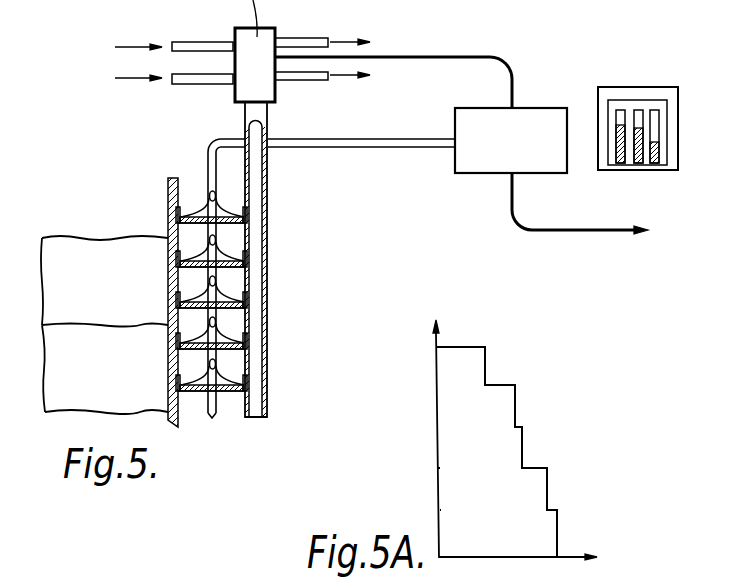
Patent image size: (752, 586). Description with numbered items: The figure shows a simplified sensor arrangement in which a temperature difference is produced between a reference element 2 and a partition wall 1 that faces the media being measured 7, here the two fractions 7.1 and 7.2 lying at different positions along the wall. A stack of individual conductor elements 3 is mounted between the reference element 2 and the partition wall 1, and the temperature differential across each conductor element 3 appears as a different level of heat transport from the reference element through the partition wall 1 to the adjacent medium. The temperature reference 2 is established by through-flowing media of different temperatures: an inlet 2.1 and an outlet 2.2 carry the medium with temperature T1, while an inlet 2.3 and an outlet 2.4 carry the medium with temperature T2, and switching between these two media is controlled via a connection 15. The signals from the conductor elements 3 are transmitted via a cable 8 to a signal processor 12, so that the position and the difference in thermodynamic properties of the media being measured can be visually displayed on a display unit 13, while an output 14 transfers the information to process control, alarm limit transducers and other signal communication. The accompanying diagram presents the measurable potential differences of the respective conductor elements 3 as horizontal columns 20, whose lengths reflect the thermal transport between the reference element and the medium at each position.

In FIG. 5, the partition wall 1 is at (168, 200).
In FIG. 5, the reference element 2 is at (270, 225).
In FIG. 5, the inlet 2.1 is at (188, 43).
In FIG. 5, the outlet 2.2 is at (313, 40).
In FIG. 5, the inlet 2.3 is at (187, 84).
In FIG. 5, the outlet 2.4 is at (318, 82).
In FIG. 5, the conductor elements 3 is at (245, 296).
In FIG. 5, the medium being measured 7 is at (78, 216).
In FIG. 5, the medium being measured 7.1 is at (118, 295).
In FIG. 5, the medium being measured 7.2 is at (120, 385).
In FIG. 5, the cable 8 is at (415, 139).
In FIG. 5, the signal processor 12 is at (532, 120).
In FIG. 5, the display unit 13 is at (678, 100).
In FIG. 5, the output 14 is at (577, 230).
In FIG. 5, the connection 15 is at (442, 57).
In FIG. 5A, the horizontal columns 20 is at (540, 488).
In FIG. 5, the temperature of first through-flowing medium T1 is at (115, 47).
In FIG. 5, the temperature of second through-flowing medium T2 is at (115, 80).